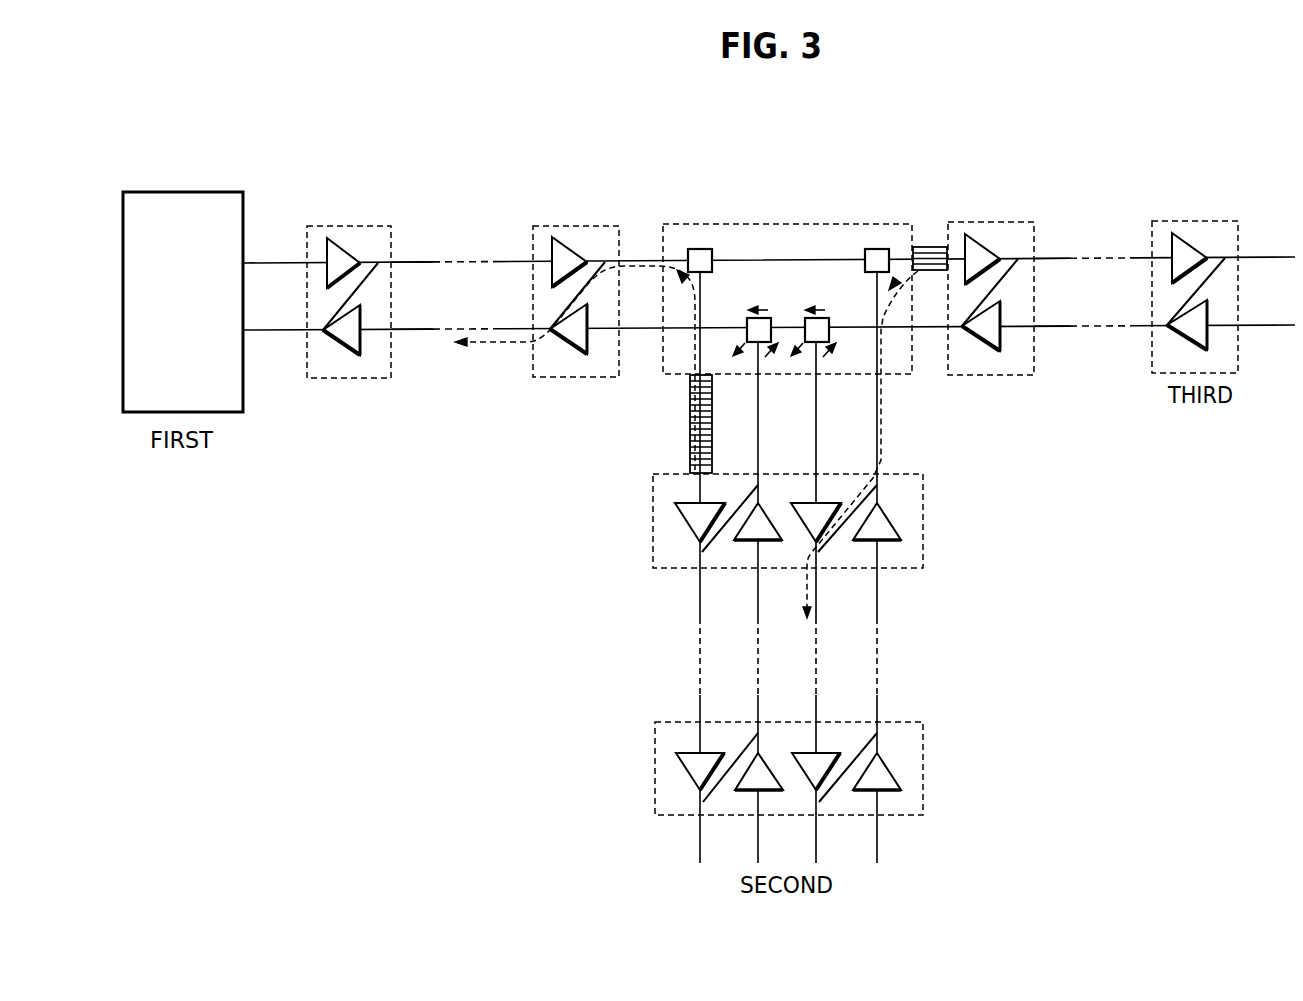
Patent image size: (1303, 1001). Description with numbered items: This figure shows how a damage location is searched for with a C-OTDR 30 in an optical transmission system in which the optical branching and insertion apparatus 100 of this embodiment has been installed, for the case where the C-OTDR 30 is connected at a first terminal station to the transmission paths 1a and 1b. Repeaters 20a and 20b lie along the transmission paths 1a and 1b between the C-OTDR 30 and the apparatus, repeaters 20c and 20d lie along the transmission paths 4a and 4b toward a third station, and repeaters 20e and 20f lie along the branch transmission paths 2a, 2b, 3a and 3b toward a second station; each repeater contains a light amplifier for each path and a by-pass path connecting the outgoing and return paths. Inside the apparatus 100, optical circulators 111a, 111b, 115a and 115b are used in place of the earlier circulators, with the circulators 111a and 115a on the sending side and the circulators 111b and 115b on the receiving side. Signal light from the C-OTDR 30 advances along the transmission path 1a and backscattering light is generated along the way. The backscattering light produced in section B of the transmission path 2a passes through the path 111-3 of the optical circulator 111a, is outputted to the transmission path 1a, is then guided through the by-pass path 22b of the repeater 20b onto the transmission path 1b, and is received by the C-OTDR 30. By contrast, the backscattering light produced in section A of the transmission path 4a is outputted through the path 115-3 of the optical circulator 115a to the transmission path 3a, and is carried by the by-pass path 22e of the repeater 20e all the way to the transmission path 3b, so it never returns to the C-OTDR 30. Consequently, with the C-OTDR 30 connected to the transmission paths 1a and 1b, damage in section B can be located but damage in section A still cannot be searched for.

The C-OTDR 30 is at (183, 192).
The repeater 20a is at (352, 226).
The repeater 20b is at (552, 260).
The repeater 20c is at (990, 222).
The repeater 20d is at (1197, 221).
The repeater 20e is at (747, 506).
The repeater 20f is at (654, 750).
The optical branching and insertion apparatus 100 is at (790, 224).
The transmission path 1a is at (412, 261).
The transmission path 1b is at (412, 332).
The transmission path 4a is at (1052, 257).
The transmission path 4b is at (1052, 328).
The transmission path 2a is at (700, 575).
The transmission path 2b is at (758, 575).
The transmission path 3a is at (878, 575).
The transmission path 3b is at (817, 575).
The optical circulator 111a is at (713, 257).
The optical circulator 111b is at (829, 319).
The optical circulator 115a is at (866, 257).
The optical circulator 115b is at (745, 325).
The path of the optical circulator 111a 111-3 is at (693, 280).
The path of the optical circulator 115a 115-3 is at (894, 279).
The by-pass path 22b is at (566, 309).
The by-pass path 22e is at (862, 502).
The section A is at (930, 241).
The section B is at (689, 424).